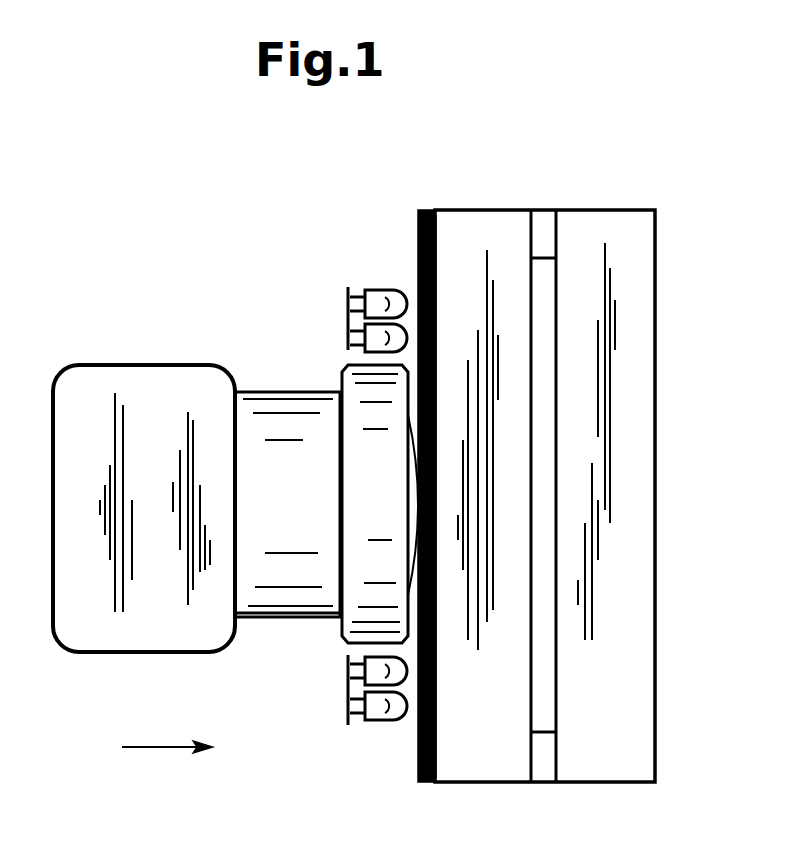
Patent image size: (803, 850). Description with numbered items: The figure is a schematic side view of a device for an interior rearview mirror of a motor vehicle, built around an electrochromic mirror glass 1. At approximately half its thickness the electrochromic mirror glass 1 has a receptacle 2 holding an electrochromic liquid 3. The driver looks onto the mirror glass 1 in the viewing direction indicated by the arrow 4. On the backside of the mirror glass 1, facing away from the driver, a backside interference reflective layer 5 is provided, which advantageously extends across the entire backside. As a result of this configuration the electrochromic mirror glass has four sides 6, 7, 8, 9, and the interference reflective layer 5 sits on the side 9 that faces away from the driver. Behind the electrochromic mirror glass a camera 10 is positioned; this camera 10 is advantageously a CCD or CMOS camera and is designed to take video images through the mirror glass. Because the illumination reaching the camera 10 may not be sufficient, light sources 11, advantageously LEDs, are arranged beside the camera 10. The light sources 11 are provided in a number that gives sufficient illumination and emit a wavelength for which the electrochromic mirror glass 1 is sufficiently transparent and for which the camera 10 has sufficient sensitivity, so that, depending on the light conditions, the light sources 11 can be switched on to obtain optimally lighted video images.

The electrochromic mirror glass 1 is at (608, 181).
The receptacle 2 is at (557, 373).
The electrochromic liquid 3 is at (548, 425).
The arrow 4 is at (668, 540).
The interference reflective layer 5 is at (420, 232).
The side 6 is at (655, 610).
The side 7 is at (558, 685).
The side 8 is at (531, 682).
The side 9 is at (436, 262).
The camera 10 is at (80, 636).
The light sources 11 is at (366, 296).